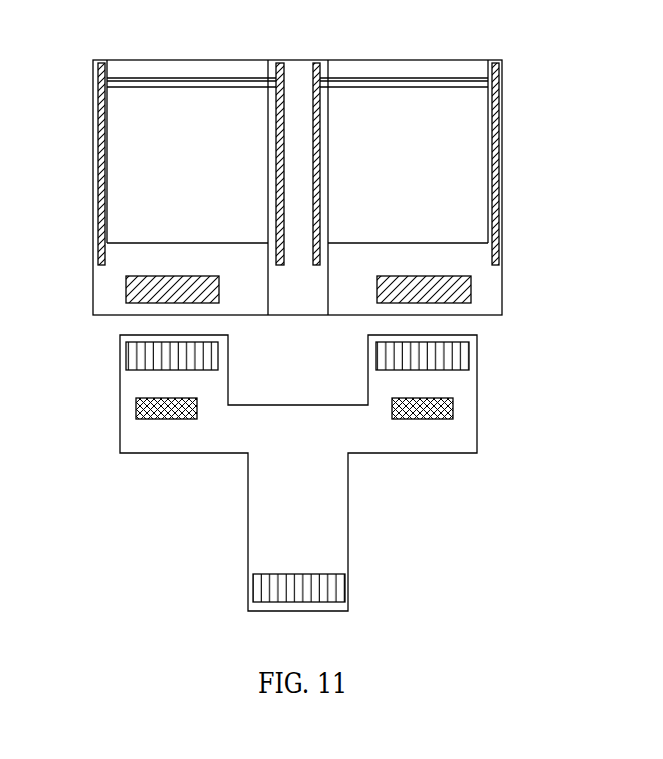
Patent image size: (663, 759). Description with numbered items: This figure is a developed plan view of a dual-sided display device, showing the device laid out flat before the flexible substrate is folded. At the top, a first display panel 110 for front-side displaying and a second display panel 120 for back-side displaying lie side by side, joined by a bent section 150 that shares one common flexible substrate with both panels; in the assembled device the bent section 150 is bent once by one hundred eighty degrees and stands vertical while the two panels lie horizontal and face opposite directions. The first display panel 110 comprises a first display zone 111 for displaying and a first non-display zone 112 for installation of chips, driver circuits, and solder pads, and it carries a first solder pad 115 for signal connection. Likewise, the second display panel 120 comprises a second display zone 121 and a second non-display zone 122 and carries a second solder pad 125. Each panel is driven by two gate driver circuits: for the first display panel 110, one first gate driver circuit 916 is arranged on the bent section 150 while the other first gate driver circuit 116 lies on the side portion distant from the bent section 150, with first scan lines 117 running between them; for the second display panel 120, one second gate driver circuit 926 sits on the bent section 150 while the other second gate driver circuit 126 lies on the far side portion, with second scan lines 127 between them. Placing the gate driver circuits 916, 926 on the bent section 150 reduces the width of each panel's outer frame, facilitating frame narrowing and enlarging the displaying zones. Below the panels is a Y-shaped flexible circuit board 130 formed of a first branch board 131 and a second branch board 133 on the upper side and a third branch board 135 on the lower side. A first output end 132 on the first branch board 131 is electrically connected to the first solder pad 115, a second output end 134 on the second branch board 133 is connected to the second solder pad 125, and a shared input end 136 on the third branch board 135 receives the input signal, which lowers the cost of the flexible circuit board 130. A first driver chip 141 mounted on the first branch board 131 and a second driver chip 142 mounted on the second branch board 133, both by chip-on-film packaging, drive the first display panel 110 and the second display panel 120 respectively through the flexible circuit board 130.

The first display panel 110 is at (98, 113).
The first display zone 111 is at (121, 168).
The first non-display zone 112 is at (104, 278).
The first solder pad 115 is at (130, 290).
The first gate driver circuit 116 is at (101, 78).
The first scan lines 117 is at (166, 79).
The second display panel 120 is at (500, 112).
The second display zone 121 is at (473, 147).
The second non-display zone 122 is at (485, 278).
The second solder pad 125 is at (455, 290).
The second gate driver circuit 126 is at (497, 80).
The second scan lines 127 is at (398, 80).
The flexible circuit board 130 is at (478, 396).
The first branch board 131 is at (126, 403).
The first output end 132 is at (138, 355).
The second branch board 133 is at (463, 437).
The second output end 134 is at (450, 357).
The third branch board 135 is at (330, 535).
The input end 136 is at (320, 590).
The first driver chip 141 is at (162, 416).
The second driver chip 142 is at (450, 412).
The bent section 150 is at (300, 75).
The first gate driver circuit 916 is at (282, 65).
The second gate driver circuit 926 is at (316, 65).